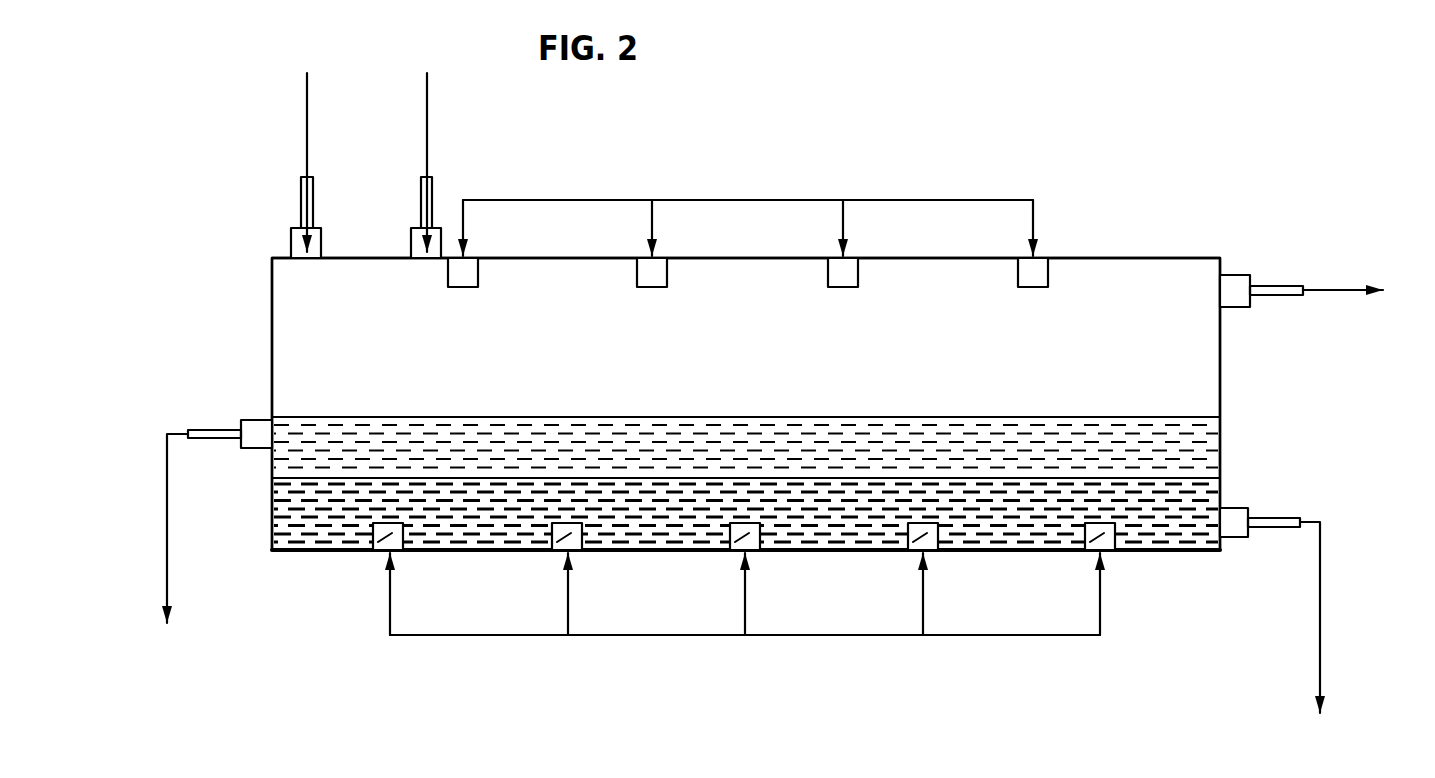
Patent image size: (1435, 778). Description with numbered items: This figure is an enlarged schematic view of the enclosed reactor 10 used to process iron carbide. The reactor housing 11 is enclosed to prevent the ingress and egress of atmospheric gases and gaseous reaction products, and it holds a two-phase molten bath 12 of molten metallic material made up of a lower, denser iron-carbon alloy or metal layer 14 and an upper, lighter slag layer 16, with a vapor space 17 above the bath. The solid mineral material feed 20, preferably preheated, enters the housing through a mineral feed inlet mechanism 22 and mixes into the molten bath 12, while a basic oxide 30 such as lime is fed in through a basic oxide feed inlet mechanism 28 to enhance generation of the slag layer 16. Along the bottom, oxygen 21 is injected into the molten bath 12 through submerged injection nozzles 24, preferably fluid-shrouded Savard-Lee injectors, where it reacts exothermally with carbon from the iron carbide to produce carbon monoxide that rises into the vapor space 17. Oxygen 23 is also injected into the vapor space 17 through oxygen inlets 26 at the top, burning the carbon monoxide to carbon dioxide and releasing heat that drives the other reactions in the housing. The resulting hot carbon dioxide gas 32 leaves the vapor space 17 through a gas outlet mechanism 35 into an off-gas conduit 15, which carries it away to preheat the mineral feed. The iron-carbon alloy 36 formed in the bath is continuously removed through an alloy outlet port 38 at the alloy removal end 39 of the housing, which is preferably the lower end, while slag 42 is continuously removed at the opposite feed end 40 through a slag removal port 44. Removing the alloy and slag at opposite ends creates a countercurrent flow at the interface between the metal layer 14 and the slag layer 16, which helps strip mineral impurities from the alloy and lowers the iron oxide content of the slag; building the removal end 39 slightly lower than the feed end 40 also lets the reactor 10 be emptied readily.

The enclosed reactor 10 is at (1153, 170).
The reactor housing 11 is at (1168, 257).
The molten bath 12 is at (413, 405).
The metal layer 14 is at (1176, 515).
The off-gas conduit 15 is at (1241, 308).
The slag layer 16 is at (1206, 434).
The vapor space 17 is at (458, 348).
The solid mineral material feed 20 is at (307, 145).
The oxygen 21 is at (672, 635).
The mineral feed inlet mechanism 22 is at (320, 229).
The oxygen 23 is at (747, 200).
The submerged injection nozzles 24 is at (372, 548).
The oxygen inlets 26 is at (465, 287).
The basic oxide feed inlet mechanism 28 is at (411, 229).
The basic oxide 30 is at (427, 145).
The hot carbon dioxide gas 32 is at (1320, 290).
The gas outlet mechanism 35 is at (1234, 274).
The iron-carbon alloy 36 is at (1320, 613).
The alloy outlet port 38 is at (1233, 508).
The alloy removal end 39 is at (1222, 543).
The feed end 40 is at (270, 507).
The slag 42 is at (167, 483).
The slag removal port 44 is at (265, 420).